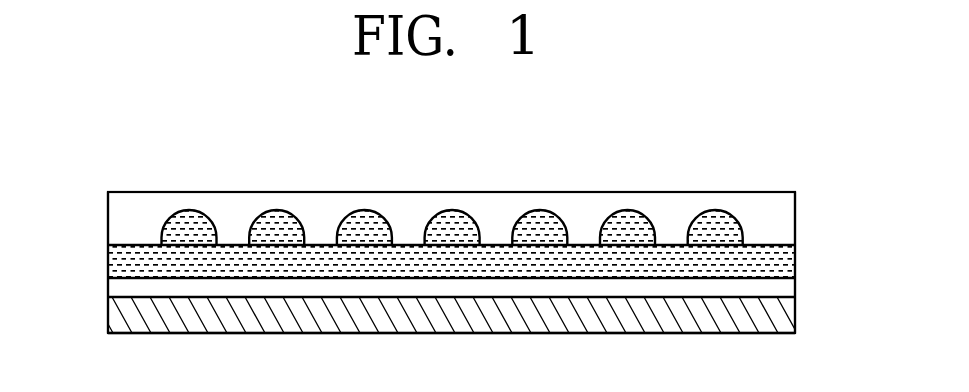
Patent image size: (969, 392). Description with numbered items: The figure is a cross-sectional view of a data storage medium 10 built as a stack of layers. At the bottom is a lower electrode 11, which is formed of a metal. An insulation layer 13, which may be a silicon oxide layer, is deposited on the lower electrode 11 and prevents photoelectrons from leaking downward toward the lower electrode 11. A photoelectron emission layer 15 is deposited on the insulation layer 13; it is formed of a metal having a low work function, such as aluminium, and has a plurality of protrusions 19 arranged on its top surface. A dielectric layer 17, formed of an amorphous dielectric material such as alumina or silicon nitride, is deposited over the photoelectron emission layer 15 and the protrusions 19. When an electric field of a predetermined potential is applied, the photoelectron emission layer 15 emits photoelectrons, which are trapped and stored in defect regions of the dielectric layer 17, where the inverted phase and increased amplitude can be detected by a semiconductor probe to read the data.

The data storage medium 10 is at (812, 146).
The lower electrode 11 is at (795, 315).
The insulation layer 13 is at (795, 288).
The photoelectron emission layer 15 is at (795, 260).
The dielectric layer 17 is at (795, 223).
The protrusions 19 is at (170, 212).